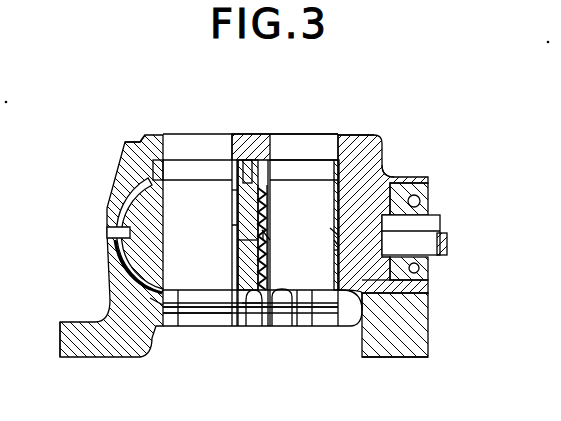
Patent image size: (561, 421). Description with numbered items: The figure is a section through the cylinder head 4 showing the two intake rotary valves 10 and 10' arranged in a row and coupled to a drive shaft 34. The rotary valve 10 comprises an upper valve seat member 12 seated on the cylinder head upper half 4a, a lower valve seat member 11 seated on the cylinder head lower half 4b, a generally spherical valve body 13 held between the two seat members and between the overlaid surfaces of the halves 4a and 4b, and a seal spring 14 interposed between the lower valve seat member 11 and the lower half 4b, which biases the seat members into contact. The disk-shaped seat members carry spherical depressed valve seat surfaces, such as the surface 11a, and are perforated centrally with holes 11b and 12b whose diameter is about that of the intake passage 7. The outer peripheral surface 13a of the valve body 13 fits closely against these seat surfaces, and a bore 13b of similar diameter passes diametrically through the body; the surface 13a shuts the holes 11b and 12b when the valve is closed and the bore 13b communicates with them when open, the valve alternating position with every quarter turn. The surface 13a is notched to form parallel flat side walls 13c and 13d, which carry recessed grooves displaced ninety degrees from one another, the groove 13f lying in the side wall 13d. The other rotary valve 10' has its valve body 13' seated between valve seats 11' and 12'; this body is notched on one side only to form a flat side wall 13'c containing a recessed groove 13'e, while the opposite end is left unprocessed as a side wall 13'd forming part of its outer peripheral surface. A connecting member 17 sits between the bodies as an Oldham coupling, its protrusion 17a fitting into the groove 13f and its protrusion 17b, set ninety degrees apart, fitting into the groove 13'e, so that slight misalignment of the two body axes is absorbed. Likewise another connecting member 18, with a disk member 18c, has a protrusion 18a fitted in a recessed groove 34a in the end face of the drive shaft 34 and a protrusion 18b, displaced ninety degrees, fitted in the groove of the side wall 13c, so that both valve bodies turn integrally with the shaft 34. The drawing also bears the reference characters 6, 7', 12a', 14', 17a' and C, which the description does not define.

The cylinder head 4 is at (105, 355).
The cylinder head upper half 4a is at (135, 150).
The cylinder head lower half 4b is at (66, 338).
The shaft 6 is at (238, 330).
The intake passage 7 is at (304, 123).
The nut 7' is at (245, 136).
The intake rotary valve 10 is at (255, 342).
The intake rotary valve 10' is at (197, 338).
The lower valve seat member 11 is at (348, 323).
The valve seat 11' is at (128, 302).
The valve seat surface 11a is at (300, 327).
The hole 11b is at (283, 327).
The upper valve seat member 12 is at (383, 214).
The valve seat 12' is at (129, 173).
The recess 12a' is at (302, 152).
The hole 12b is at (342, 148).
The valve body 13 is at (297, 201).
The valve body 13' is at (223, 201).
The outer peripheral surface 13a is at (388, 168).
The bore 13b is at (338, 340).
The side wall 13c is at (428, 188).
The side wall 13'c is at (214, 199).
The side wall 13d is at (260, 182).
The side wall 13'd is at (102, 220).
The recessed groove 13'e is at (270, 227).
The recessed groove 13f is at (334, 250).
The seal spring 14 is at (320, 322).
The pin 14' is at (170, 327).
The connecting member 17 is at (236, 264).
The protrusion 17a is at (293, 221).
The sleeve shoulder 17a' is at (253, 322).
The protrusion 17b is at (236, 246).
The connecting member 18 is at (385, 302).
The protrusion 18a is at (438, 240).
The protrusion 18b is at (340, 242).
The disk member 18c is at (395, 358).
The drive shaft 34 is at (447, 240).
The recessed groove 34a is at (382, 268).
The clearance C is at (260, 237).